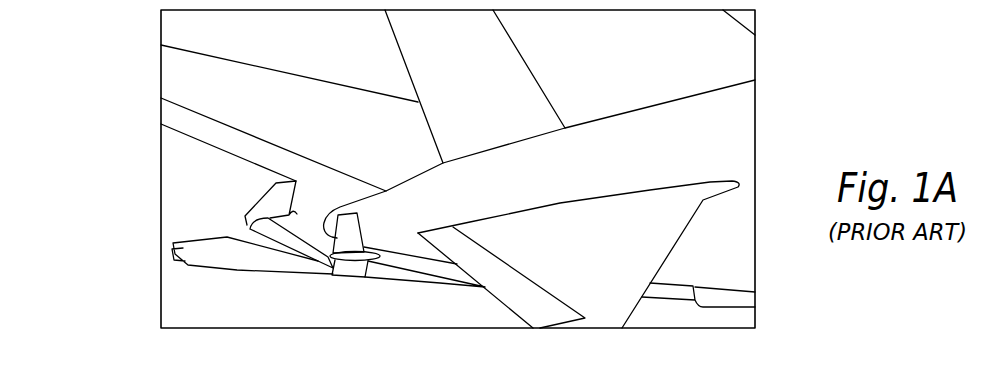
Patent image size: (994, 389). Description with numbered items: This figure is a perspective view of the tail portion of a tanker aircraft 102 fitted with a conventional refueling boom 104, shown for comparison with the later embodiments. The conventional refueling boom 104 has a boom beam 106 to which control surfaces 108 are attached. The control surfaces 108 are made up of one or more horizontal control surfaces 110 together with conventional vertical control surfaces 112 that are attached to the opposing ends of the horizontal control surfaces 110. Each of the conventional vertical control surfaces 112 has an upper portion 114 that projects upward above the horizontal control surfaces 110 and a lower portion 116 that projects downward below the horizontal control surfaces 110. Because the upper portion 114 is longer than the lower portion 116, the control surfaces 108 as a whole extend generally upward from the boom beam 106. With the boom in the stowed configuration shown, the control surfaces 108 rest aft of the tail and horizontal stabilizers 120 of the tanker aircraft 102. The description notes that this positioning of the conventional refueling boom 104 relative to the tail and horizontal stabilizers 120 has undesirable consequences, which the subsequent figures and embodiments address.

The tanker aircraft 102 is at (633, 138).
The conventional refueling boom 104 is at (280, 286).
The boom beam 106 is at (257, 257).
The control surfaces 108 is at (183, 221).
The horizontal control surfaces 110 is at (285, 233).
The conventional vertical control surfaces 112 is at (275, 199).
The upper portion 114 is at (355, 235).
The lower portion 116 is at (349, 268).
The tail and horizontal stabilizers 120 is at (302, 102).